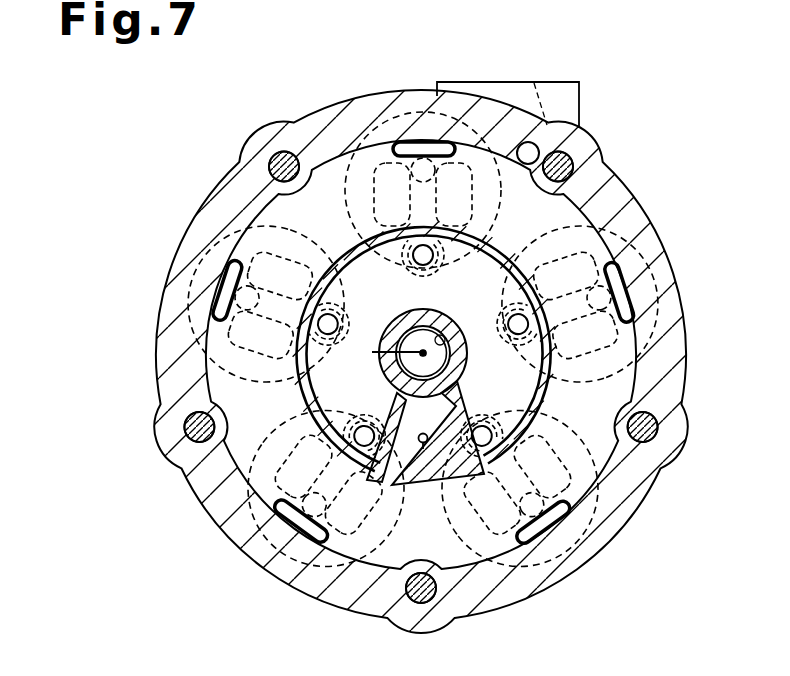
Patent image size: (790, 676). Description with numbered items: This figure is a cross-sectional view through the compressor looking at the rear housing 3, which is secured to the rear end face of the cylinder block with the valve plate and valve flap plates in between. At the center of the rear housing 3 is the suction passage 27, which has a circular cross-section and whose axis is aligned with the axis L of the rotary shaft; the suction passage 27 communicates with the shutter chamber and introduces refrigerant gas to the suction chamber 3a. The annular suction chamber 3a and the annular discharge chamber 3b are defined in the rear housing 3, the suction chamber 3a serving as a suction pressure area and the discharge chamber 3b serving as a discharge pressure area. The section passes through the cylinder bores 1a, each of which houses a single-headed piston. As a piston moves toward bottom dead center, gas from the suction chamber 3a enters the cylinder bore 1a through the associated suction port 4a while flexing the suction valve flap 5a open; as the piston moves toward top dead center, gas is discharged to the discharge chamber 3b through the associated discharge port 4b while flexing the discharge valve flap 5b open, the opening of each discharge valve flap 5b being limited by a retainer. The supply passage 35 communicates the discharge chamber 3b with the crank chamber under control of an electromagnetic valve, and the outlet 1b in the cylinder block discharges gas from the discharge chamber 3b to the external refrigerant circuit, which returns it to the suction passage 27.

The cylinder bore 1a is at (370, 133).
The outlet 1b is at (537, 77).
The rear housing 3 is at (610, 170).
The suction chamber 3a is at (431, 312).
The discharge chamber 3b is at (334, 227).
The suction port 4a is at (334, 338).
The discharge port 4b is at (627, 418).
The suction valve flap 5a is at (337, 293).
The discharge valve flap 5b is at (243, 233).
The suction passage 27 is at (423, 353).
The supply passage 35 is at (424, 460).
The axis L is at (387, 354).